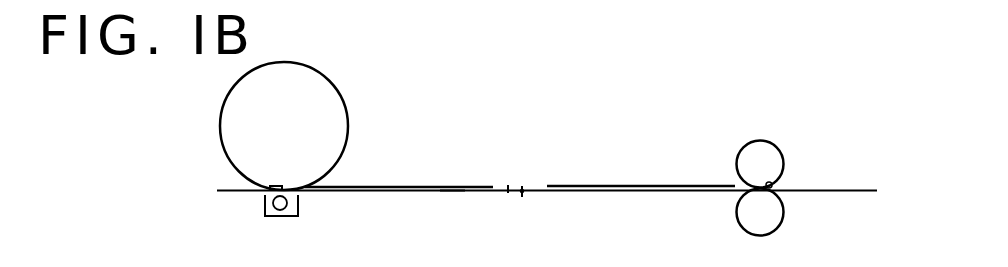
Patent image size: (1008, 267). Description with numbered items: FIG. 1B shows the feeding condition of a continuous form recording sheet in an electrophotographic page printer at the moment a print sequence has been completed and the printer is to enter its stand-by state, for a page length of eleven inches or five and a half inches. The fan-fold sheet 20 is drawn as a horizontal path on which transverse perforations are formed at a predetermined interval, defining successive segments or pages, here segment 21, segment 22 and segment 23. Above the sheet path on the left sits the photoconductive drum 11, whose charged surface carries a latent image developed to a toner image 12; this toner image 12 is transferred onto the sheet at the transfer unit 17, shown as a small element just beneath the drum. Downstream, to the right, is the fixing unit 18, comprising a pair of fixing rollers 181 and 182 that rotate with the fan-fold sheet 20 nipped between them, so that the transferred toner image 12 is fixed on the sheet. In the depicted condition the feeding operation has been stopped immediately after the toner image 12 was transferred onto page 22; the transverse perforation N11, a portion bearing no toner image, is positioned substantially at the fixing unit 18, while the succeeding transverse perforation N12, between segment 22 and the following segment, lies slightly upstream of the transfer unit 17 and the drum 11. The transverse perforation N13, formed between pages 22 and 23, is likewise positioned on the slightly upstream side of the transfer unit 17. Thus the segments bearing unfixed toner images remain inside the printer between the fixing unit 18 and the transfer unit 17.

The photoconductive drum 11 is at (343, 102).
The toner image 12 is at (408, 183).
The transfer unit 17 is at (290, 217).
The fixing unit 18 is at (805, 184).
The fixing roller 181 is at (780, 155).
The fixing roller 182 is at (782, 225).
The fan-fold sheet 20 is at (452, 191).
The segment 21 is at (522, 187).
The segment 22 is at (508, 187).
The segment 23 is at (228, 188).
The transverse perforation N11 is at (772, 185).
The transverse perforation N12 is at (523, 194).
The transverse perforation N13 is at (258, 193).